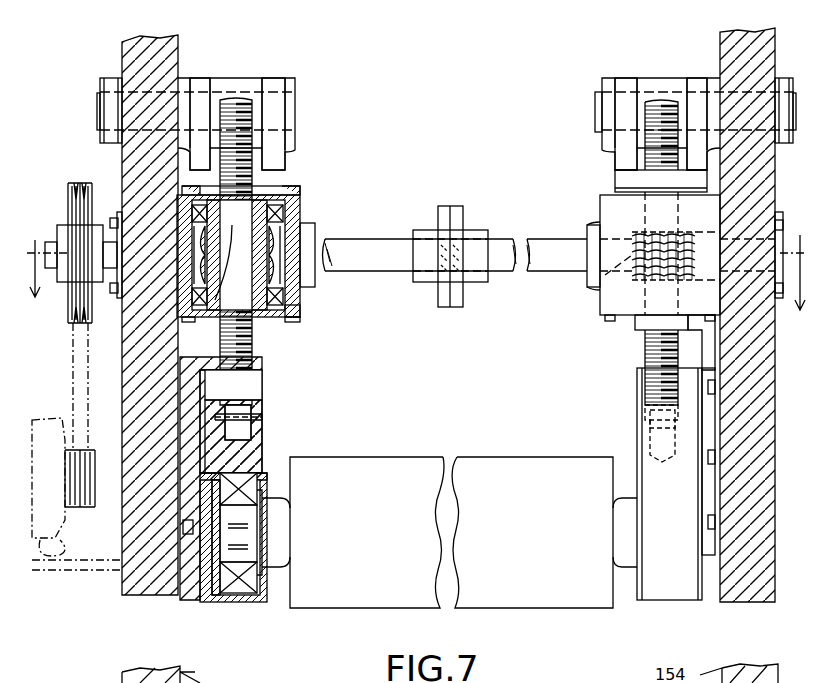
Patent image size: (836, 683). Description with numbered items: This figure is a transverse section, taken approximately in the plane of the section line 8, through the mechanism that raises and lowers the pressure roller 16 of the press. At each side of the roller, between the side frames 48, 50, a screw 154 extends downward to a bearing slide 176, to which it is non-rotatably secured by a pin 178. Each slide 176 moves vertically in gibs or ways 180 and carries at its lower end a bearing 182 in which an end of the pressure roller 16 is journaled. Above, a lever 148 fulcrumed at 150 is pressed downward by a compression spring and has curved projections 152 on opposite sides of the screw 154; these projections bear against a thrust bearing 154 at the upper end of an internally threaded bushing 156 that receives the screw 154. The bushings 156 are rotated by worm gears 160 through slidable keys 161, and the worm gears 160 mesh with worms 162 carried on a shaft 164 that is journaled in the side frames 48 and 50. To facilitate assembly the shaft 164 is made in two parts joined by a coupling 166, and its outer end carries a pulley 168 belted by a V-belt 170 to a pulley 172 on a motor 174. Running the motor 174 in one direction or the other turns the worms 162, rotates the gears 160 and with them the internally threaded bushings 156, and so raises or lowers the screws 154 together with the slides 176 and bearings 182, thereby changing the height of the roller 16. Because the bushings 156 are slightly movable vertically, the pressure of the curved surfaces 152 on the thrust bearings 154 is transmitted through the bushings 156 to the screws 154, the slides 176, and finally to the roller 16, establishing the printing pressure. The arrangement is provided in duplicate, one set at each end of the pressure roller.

The section line 8- 8 is at (418, 279).
The pressure roller 16 is at (423, 462).
The side frame 48 is at (125, 597).
The side frame 50 is at (770, 585).
The lever 148 is at (282, 78).
The fulcrum 150 is at (300, 108).
The curved projections 152 is at (285, 162).
The screw 154 is at (240, 98).
The internally threaded bushing 156 is at (285, 318).
The worm gear 160 is at (275, 240).
The slidable key 161 is at (215, 300).
The worm 162 is at (600, 287).
The shaft 164 is at (545, 275).
The coupling 166 is at (455, 206).
The pulley 168 is at (90, 188).
The V-belt 170 is at (75, 370).
The pulley 172 is at (90, 510).
The motor 174 is at (62, 560).
The bearing slide 176 is at (265, 448).
The pin 178 is at (262, 416).
The gibs or ways 180 is at (182, 365).
The bearing 182 is at (240, 600).